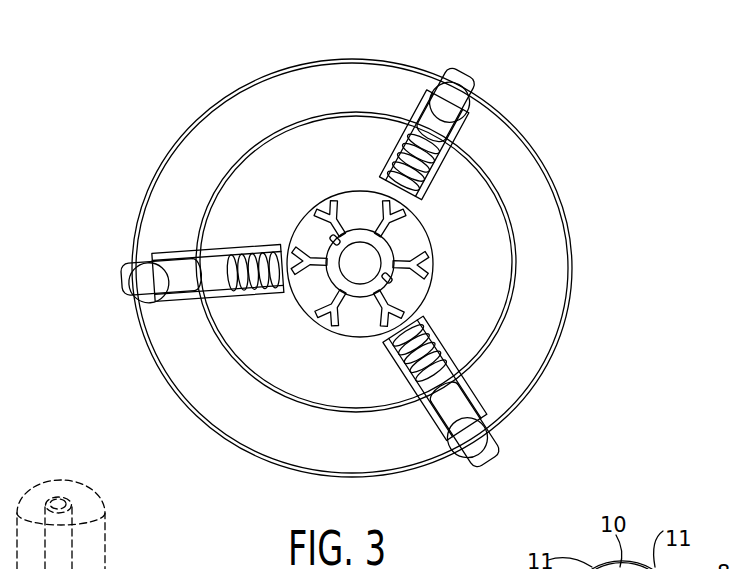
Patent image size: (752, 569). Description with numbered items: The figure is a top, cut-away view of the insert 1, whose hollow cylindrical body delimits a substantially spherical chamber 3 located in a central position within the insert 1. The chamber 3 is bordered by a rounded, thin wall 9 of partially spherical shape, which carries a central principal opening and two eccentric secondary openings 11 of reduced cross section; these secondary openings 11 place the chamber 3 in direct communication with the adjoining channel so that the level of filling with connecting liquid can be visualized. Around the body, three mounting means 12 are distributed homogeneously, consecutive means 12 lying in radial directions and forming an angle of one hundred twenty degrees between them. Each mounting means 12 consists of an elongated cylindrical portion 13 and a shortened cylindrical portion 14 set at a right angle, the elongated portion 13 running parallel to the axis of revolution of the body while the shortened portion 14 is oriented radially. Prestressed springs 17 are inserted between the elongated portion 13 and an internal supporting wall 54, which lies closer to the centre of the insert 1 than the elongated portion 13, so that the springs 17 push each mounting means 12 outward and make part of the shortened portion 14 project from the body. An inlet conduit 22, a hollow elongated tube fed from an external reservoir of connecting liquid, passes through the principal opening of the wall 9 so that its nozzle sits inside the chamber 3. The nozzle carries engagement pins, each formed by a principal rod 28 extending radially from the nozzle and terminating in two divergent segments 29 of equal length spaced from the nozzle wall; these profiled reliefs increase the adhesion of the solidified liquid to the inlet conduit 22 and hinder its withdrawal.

The insert 1 is at (594, 223).
The chamber 3 is at (364, 316).
The wall 9 is at (460, 198).
The secondary openings 11 is at (307, 230).
The mounting means 12 is at (302, 242).
The elongated cylindrical portion 13 is at (424, 88).
The shortened cylindrical portion 14 is at (452, 74).
The prestressed springs 17 is at (390, 160).
The inlet conduit 22 is at (354, 269).
The principal rod 28 is at (402, 233).
The segments 29 is at (332, 240).
The internal supporting wall 54 is at (330, 292).